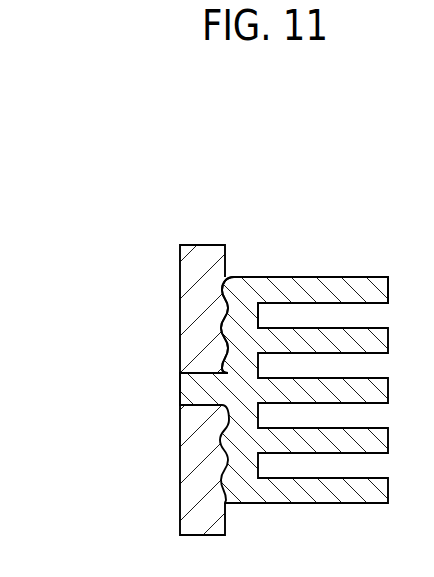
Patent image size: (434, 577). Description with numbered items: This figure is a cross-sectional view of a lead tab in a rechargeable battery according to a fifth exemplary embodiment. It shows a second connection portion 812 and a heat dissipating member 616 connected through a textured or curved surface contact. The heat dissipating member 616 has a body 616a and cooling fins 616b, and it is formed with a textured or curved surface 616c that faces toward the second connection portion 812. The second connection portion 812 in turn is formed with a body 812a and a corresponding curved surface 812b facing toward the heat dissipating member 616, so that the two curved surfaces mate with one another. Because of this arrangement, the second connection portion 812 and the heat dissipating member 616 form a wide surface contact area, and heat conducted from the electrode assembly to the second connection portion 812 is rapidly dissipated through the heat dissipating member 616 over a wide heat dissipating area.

The heat dissipating member 616 is at (392, 186).
The body 616a is at (262, 313).
The cooling fins 616b is at (348, 277).
The textured or curved surface 616c is at (224, 284).
The second connection portion 812 is at (76, 410).
The curved surface 812b is at (225, 418).
The body 812a is at (197, 457).